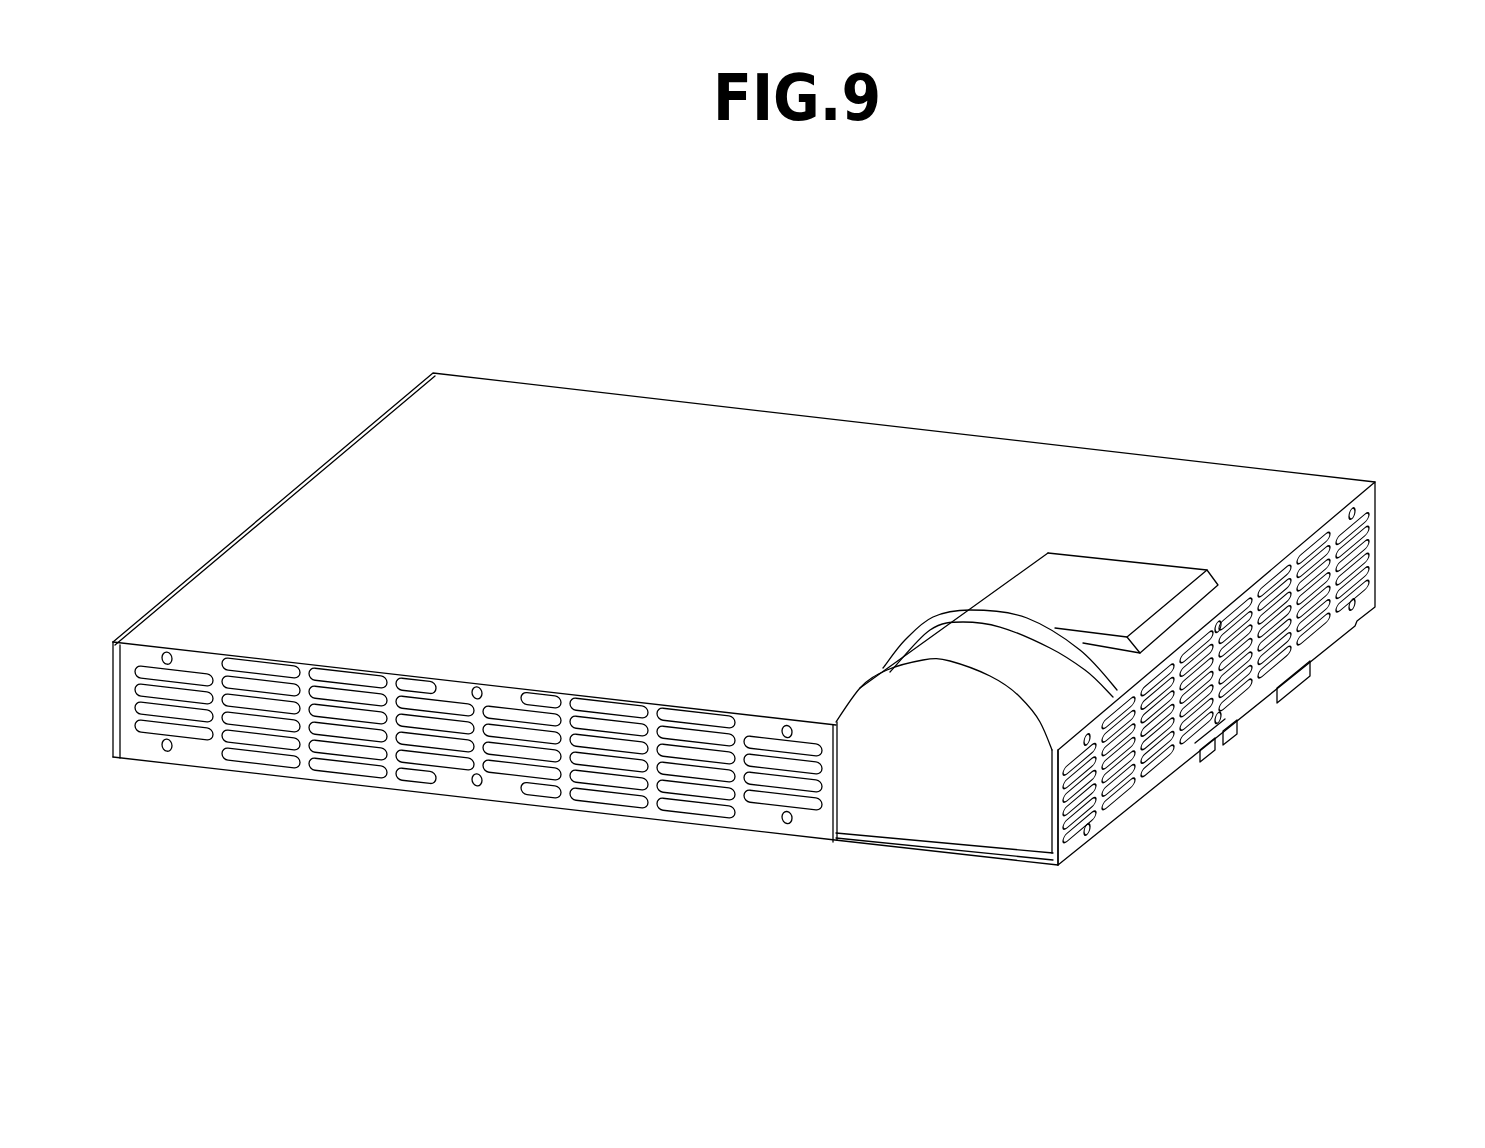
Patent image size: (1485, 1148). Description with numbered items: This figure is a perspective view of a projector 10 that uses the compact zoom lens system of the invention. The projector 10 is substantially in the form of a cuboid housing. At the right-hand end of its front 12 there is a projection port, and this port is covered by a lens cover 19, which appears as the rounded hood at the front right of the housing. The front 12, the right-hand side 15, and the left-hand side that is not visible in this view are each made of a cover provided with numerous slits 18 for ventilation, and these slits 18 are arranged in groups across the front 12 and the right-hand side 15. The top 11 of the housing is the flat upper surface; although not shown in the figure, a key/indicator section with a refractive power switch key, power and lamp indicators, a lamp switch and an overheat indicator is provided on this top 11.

The projector 10 is at (900, 367).
The top 11 is at (510, 415).
The front 12 is at (453, 780).
The right-hand side 15 is at (1328, 653).
The slits 18 is at (347, 753).
The lens cover 19 is at (948, 802).